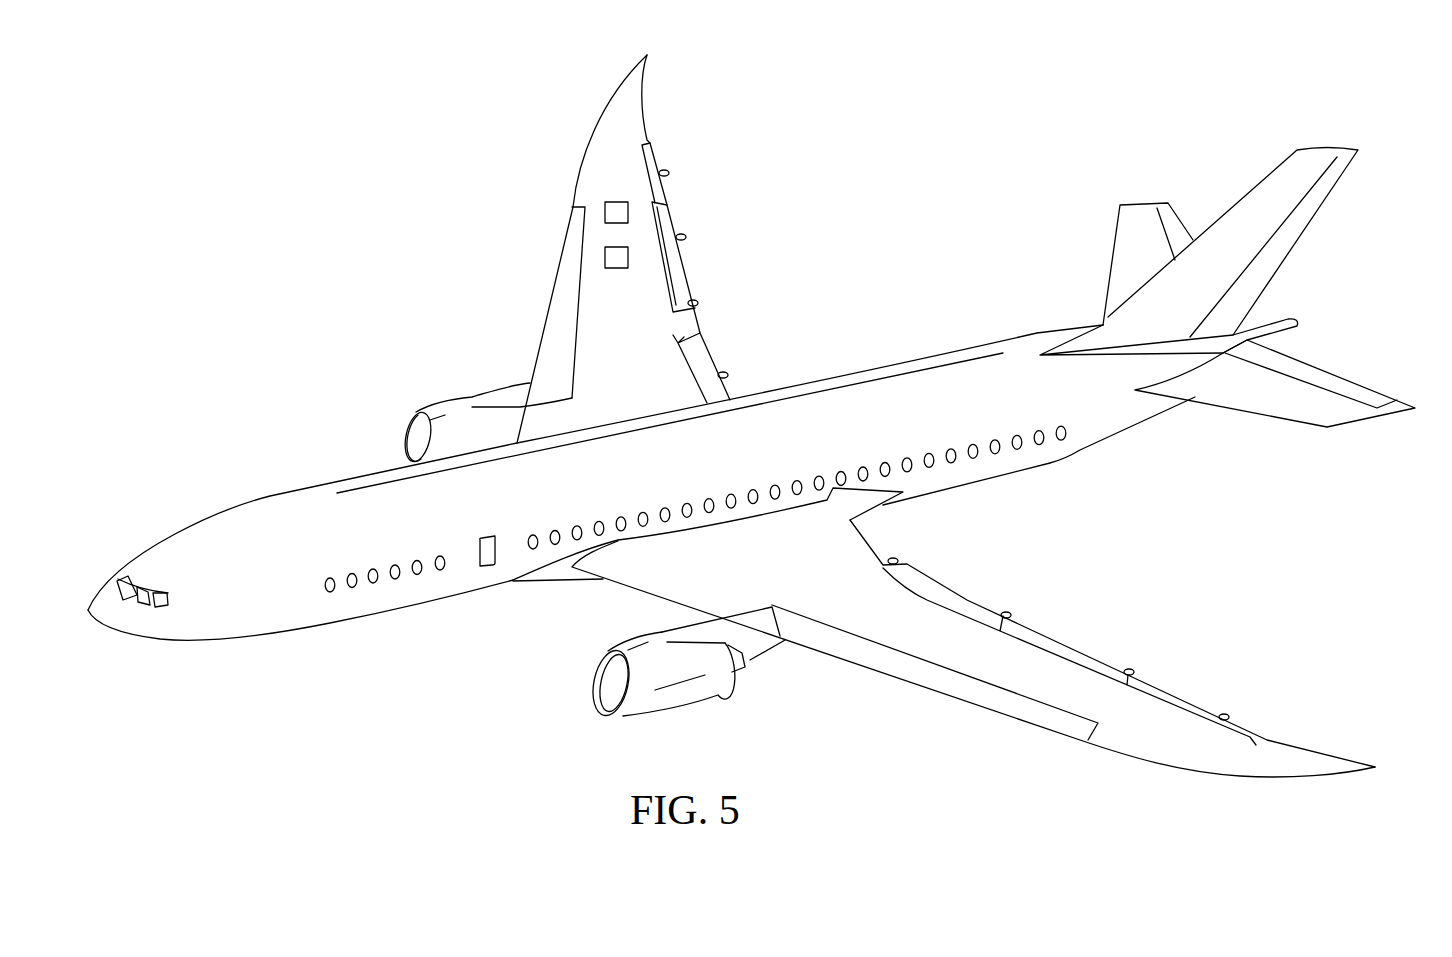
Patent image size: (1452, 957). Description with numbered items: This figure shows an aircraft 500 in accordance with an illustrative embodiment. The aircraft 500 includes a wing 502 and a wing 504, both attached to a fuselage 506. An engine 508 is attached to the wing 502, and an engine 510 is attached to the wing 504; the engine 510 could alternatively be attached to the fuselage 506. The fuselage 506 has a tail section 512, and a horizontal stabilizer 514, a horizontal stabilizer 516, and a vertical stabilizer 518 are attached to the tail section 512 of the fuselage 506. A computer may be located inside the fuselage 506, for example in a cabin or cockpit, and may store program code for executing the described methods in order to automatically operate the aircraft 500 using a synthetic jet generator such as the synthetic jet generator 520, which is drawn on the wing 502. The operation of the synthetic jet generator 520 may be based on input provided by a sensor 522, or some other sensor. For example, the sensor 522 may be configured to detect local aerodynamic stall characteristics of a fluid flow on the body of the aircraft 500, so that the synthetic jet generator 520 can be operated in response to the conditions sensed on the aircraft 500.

The aircraft 500 is at (751, 464).
The wing 502 is at (623, 249).
The wing 504 is at (1272, 800).
The fuselage 506 is at (266, 498).
The engine 508 is at (446, 396).
The engine 510 is at (680, 712).
The tail section 512 is at (1227, 335).
The horizontal stabilizer 514 is at (1107, 258).
The horizontal stabilizer 516 is at (1181, 455).
The vertical stabilizer 518 is at (1305, 232).
The synthetic jet generator 520 is at (617, 202).
The sensor 522 is at (629, 256).